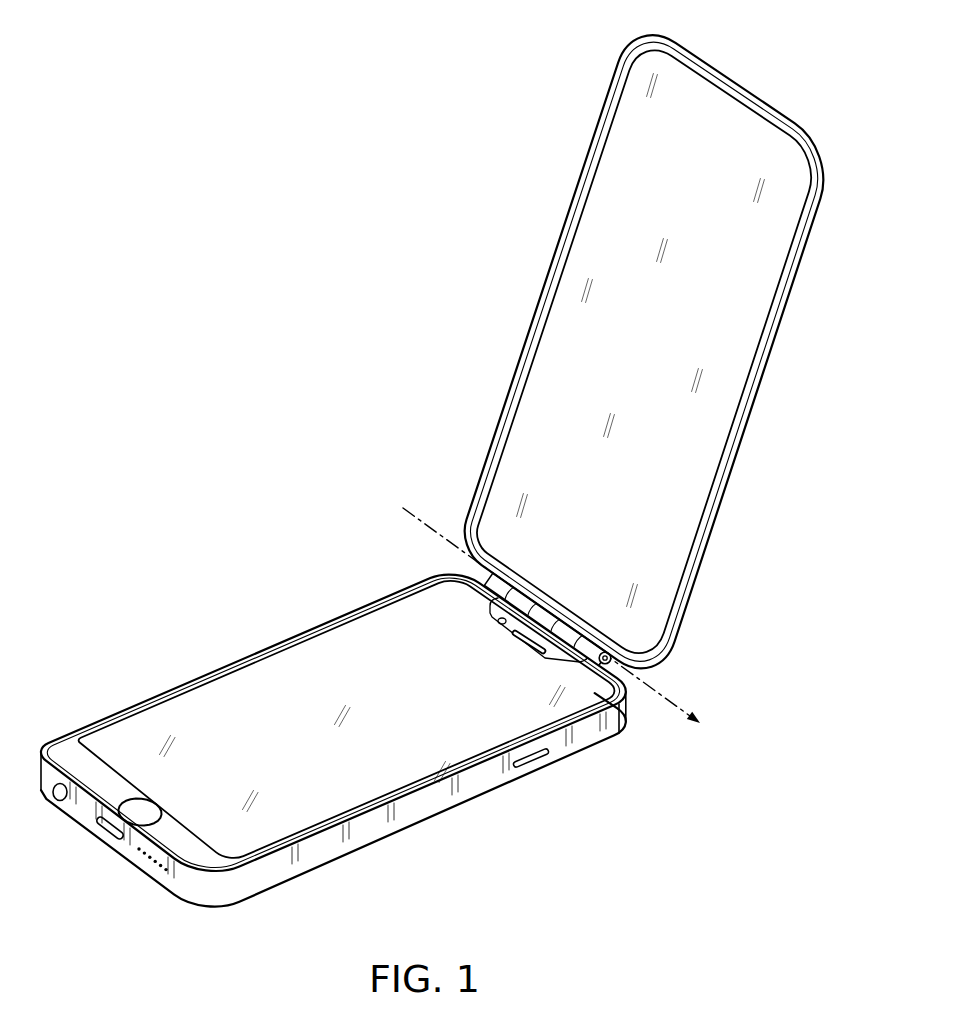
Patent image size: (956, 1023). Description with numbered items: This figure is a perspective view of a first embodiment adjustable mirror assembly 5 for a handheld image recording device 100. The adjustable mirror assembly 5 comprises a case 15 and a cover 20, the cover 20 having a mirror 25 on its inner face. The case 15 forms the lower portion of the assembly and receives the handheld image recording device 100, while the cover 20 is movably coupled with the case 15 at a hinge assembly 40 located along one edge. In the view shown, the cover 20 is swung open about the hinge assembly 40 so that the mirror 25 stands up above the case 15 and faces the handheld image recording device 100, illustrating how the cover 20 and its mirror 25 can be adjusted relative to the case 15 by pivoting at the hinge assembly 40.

The adjustable mirror assembly 5 is at (213, 94).
The case 15 is at (373, 822).
The cover 20 is at (732, 470).
The mirror 25 is at (687, 123).
The hinge assembly 40 is at (600, 627).
The handheld image recording device 100 is at (247, 692).